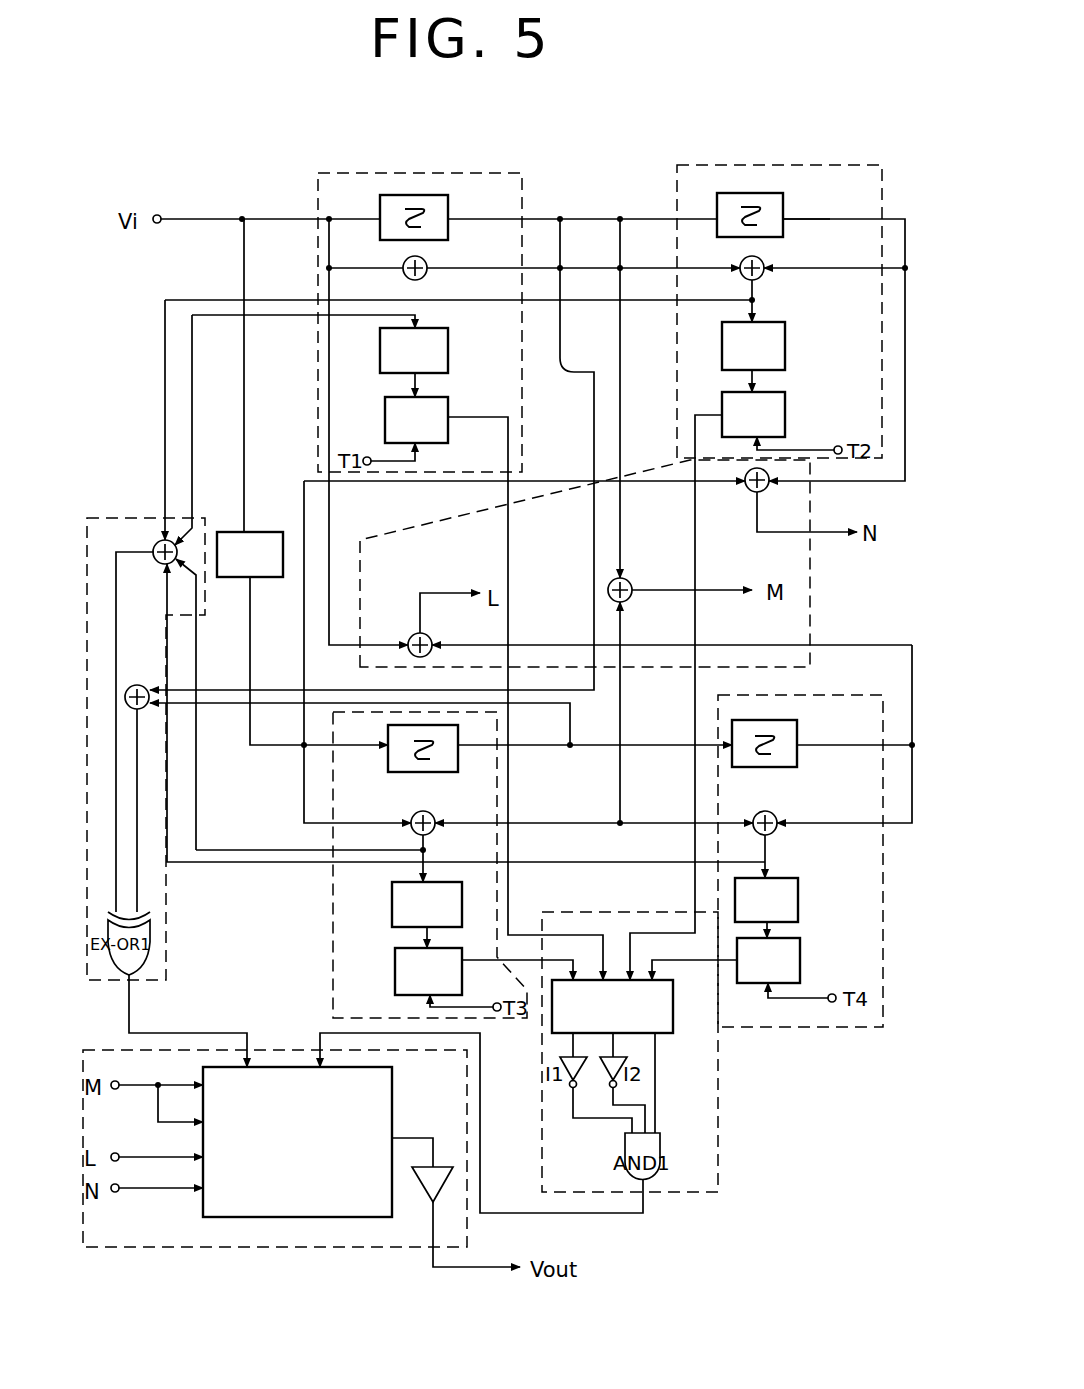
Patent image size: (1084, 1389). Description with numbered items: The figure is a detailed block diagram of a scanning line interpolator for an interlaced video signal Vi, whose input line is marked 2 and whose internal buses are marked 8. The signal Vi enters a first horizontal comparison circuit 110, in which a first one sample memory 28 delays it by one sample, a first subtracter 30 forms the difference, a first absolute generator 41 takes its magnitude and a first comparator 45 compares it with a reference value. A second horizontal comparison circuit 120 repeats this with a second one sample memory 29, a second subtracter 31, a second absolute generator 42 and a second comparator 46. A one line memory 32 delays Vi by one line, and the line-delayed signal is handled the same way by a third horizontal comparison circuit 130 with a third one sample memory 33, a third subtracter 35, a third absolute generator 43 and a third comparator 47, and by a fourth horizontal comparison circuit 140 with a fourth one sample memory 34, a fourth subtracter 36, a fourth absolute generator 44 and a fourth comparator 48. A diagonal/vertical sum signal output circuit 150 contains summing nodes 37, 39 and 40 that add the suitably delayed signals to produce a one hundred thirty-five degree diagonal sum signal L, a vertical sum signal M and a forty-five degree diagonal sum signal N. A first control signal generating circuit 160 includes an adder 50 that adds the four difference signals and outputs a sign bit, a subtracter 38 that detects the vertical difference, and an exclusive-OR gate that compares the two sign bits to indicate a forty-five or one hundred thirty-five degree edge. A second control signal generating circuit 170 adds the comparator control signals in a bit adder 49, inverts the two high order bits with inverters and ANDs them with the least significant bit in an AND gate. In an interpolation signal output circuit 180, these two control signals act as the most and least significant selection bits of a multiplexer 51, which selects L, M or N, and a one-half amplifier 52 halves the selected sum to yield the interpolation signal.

The input signal line 2 is at (198, 226).
The 8-bit bus 8 is at (825, 226).
The first one sample memory 28 is at (448, 207).
The second one sample memory 29 is at (783, 205).
The first subtracter 30 is at (427, 266).
The second subtracter 31 is at (762, 260).
The one line memory 32 is at (264, 577).
The third one sample memory 33 is at (467, 724).
The fourth one sample memory 34 is at (797, 730).
The third subtracter 35 is at (431, 813).
The fourth subtracter 36 is at (768, 811).
The adder 37 is at (431, 638).
The subtractor 38 is at (144, 687).
The adder 39 is at (631, 582).
The adder 40 is at (750, 490).
The first absolute generator 41 is at (448, 354).
The second absolute generator 42 is at (785, 345).
The third absolute generator 43 is at (392, 905).
The fourth absolute generator 44 is at (798, 898).
The first comparator 45 is at (448, 432).
The second comparator 46 is at (785, 415).
The third comparator 47 is at (395, 966).
The fourth comparator 48 is at (800, 958).
The bit adder 49 is at (673, 993).
The adder 50 is at (157, 565).
The multiplexer 51 is at (392, 1074).
The ½ amplifier 52 is at (424, 1200).
The first horizontal comparison circuit 110 is at (412, 173).
The second horizontal comparison circuit 120 is at (832, 165).
The third horizontal comparison circuit 130 is at (334, 894).
The fourth horizontal comparison circuit 140 is at (883, 862).
The diagonal/vertical sum signal output circuit 150 is at (805, 591).
The first control signal generating circuit 160 is at (108, 518).
The second control signal generating circuit 170 is at (718, 1098).
The interpolation signal output circuit 180 is at (233, 1247).